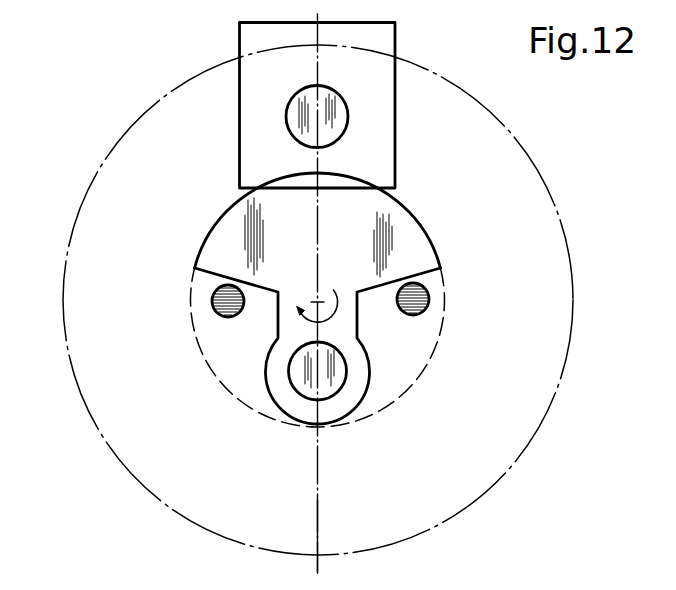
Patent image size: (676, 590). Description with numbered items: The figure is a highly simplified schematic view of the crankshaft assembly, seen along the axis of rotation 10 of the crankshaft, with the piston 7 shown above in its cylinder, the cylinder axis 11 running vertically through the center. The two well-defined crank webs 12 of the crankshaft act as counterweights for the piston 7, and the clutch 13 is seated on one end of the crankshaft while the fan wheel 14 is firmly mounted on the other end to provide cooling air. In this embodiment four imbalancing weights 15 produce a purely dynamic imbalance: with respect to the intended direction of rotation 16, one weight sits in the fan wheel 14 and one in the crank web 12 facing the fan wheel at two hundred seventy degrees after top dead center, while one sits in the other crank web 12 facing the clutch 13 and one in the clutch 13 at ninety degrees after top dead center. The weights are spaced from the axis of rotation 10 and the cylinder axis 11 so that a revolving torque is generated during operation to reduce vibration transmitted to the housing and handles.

The piston 7 is at (378, 105).
The axis of rotation 10 is at (318, 302).
The cylinder axis 11 is at (318, 517).
The crank webs 12 is at (400, 227).
The clutch 13 is at (438, 342).
The fan wheel 14 is at (572, 333).
The imbalancing weights 15 is at (212, 297).
The direction of rotation 16 is at (333, 311).